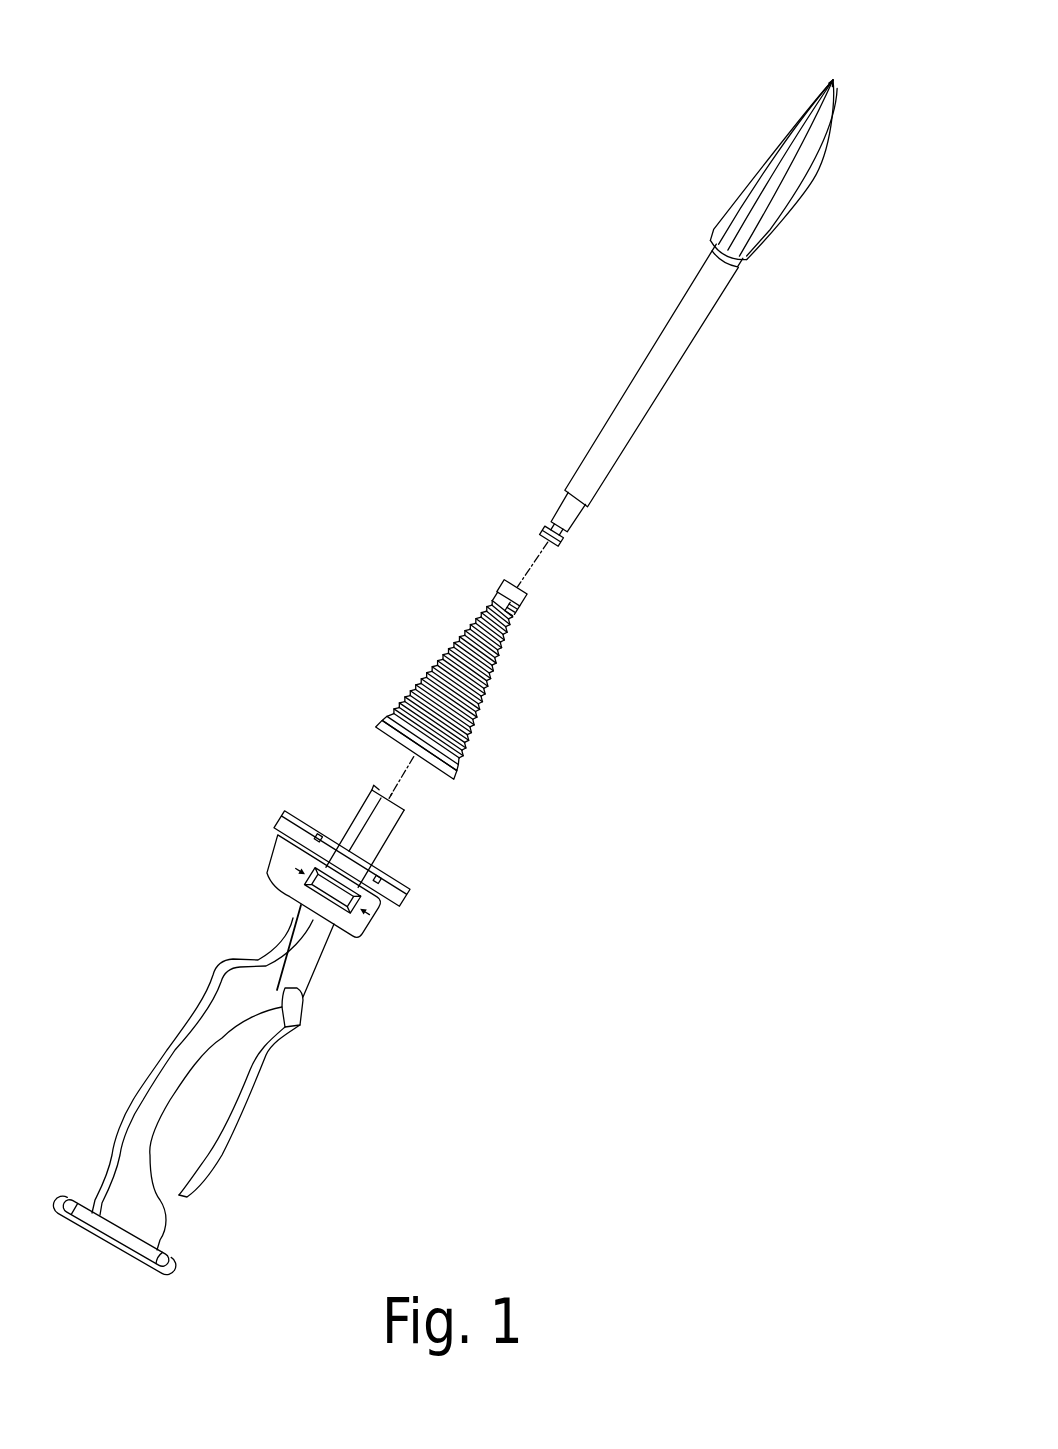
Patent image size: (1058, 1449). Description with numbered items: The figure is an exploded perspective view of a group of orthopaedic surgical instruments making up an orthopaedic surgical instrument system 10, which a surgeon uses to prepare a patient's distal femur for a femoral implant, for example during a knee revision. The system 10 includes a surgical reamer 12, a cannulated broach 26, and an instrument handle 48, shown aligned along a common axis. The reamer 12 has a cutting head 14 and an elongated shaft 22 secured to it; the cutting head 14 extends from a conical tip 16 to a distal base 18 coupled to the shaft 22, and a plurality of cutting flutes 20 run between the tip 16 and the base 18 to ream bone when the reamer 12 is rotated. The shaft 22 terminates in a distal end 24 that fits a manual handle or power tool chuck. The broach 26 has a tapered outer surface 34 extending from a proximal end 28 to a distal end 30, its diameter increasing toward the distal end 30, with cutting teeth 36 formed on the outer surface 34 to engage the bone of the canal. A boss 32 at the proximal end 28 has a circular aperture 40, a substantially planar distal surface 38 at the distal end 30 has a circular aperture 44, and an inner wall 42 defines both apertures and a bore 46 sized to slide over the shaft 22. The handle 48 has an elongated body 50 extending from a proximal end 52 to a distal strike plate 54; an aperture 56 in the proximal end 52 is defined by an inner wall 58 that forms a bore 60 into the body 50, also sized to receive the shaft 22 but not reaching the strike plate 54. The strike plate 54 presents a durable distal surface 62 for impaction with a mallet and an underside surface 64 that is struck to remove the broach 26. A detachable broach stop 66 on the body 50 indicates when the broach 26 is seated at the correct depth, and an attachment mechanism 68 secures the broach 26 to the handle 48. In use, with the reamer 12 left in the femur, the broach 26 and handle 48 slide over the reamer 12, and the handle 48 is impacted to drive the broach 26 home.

The orthopaedic surgical instrument system 10 is at (655, 97).
The surgical reamer 12 is at (828, 225).
The cutting head 14 is at (780, 164).
The tip 16 is at (831, 83).
The distal base 18 is at (726, 255).
The cutting flutes 20 is at (787, 169).
The shaft 22 is at (650, 388).
The distal end 24 is at (590, 543).
The cannulated broach 26 is at (645, 720).
The proximal end 28 is at (675, 602).
The distal end 30 is at (535, 802).
The boss 32 is at (505, 603).
The outer surface 34 is at (457, 633).
The cutting teeth 36 is at (393, 664).
The distal surface 38 is at (478, 792).
The circular aperture 40 is at (512, 593).
The inner wall 42 is at (511, 608).
The circular aperture 44 is at (385, 745).
The bore 46 is at (512, 608).
The instrument handle 48 is at (447, 1088).
The elongated body 50 is at (290, 988).
The proximal end 52 is at (452, 885).
The distal strike plate 54 is at (116, 1233).
The aperture 56 is at (366, 835).
The inner wall 58 is at (389, 797).
The bore 60 is at (390, 795).
The distal surface 62 is at (105, 1250).
The underside surface 64 is at (114, 1235).
The broach stop 66 is at (318, 888).
The attachment mechanism 68 is at (342, 858).